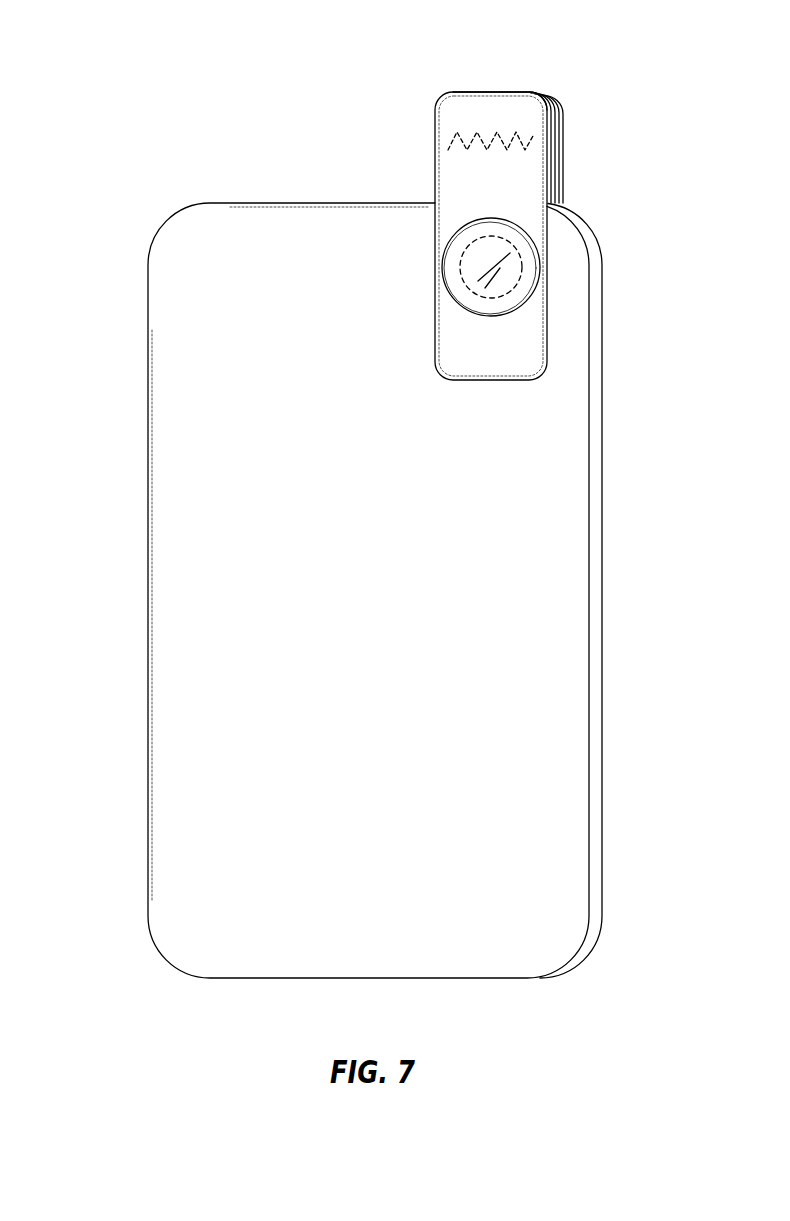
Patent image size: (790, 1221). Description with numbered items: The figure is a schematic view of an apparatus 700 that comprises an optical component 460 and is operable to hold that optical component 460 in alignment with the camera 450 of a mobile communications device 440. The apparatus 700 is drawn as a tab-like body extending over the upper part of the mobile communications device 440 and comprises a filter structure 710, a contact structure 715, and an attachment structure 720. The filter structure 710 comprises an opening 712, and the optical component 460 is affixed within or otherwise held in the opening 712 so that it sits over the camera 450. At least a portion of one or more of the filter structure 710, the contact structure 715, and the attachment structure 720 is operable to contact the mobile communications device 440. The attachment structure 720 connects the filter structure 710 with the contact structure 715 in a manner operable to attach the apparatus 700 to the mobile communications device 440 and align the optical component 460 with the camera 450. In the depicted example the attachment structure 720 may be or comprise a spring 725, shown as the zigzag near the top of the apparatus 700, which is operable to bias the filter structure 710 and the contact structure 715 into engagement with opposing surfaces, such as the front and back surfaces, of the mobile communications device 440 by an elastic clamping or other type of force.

The mobile communications device 440 is at (148, 337).
The apparatus 700 is at (504, 211).
The filter structure 710 is at (550, 347).
The opening 712 is at (442, 268).
The contact structure 715 is at (562, 197).
The attachment structure 720 is at (491, 91).
The spring 725 is at (532, 143).
The camera 450 is at (523, 270).
The optical component 460 is at (517, 300).